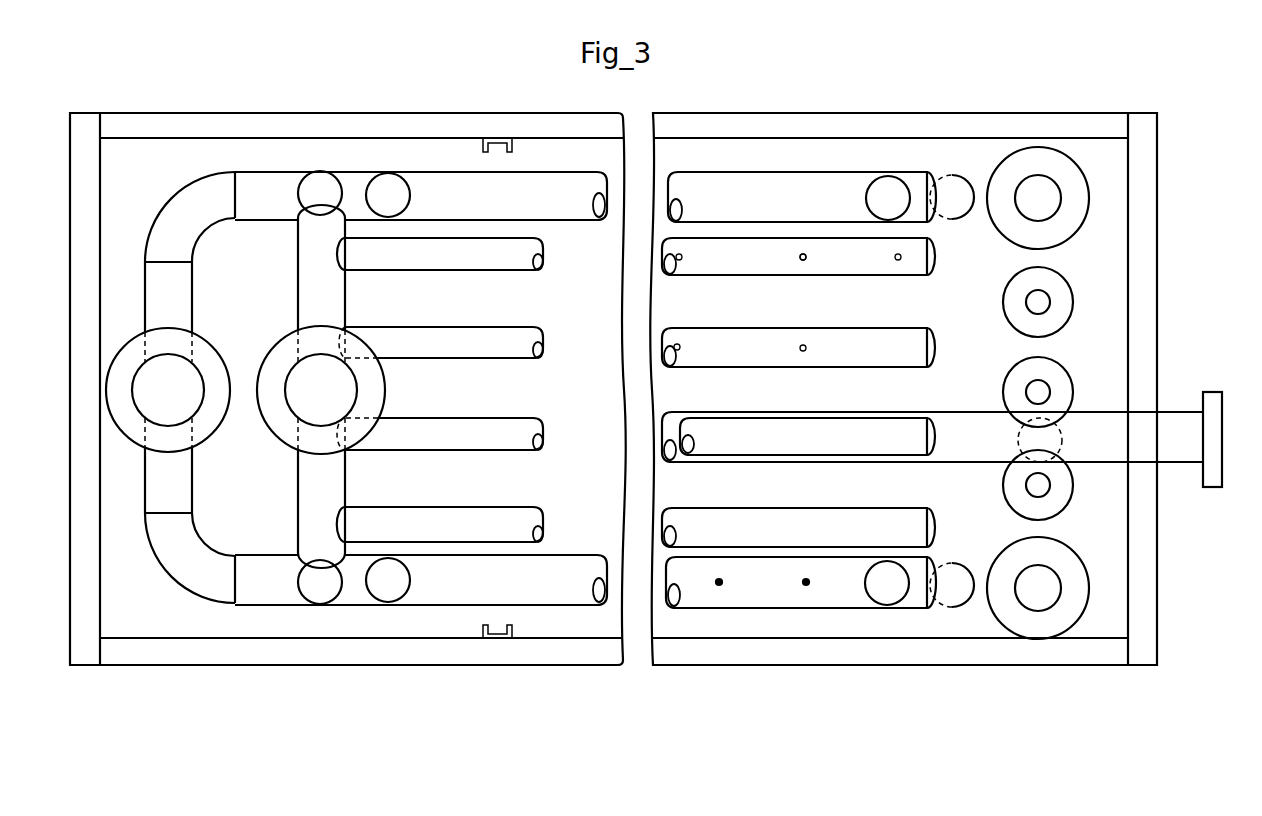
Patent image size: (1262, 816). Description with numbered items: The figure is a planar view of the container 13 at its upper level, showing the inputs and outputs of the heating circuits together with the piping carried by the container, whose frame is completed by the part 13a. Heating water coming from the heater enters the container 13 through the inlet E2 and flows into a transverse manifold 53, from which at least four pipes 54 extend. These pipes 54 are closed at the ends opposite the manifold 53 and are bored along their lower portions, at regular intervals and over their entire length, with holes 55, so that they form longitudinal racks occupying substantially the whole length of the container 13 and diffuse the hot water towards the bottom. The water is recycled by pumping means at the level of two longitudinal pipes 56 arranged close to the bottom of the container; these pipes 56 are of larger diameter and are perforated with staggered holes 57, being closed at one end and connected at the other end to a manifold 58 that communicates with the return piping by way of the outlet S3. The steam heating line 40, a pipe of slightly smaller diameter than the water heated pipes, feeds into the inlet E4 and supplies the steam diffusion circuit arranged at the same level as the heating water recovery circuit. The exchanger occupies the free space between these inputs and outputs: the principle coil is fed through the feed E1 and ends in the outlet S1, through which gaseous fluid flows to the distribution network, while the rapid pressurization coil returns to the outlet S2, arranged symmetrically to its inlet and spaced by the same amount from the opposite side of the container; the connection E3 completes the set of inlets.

The container 13 is at (145, 185).
The distributor housing cover 13a is at (1140, 625).
The steam heating line 40 is at (983, 437).
The transverse manifold 53 is at (320, 538).
The pipes 54 is at (498, 523).
The holes 55 is at (803, 254).
The longitudinal pipes 56 is at (455, 192).
The staggered holes 57 is at (719, 585).
The manifold 58 is at (172, 238).
The outlet S1 is at (1043, 203).
The outlet S2 is at (1040, 485).
The outlet S3 is at (172, 393).
The feed E1 is at (1040, 392).
The inlet E2 is at (1040, 302).
The inlet E3 is at (317, 397).
The inlet E4 is at (951, 439).